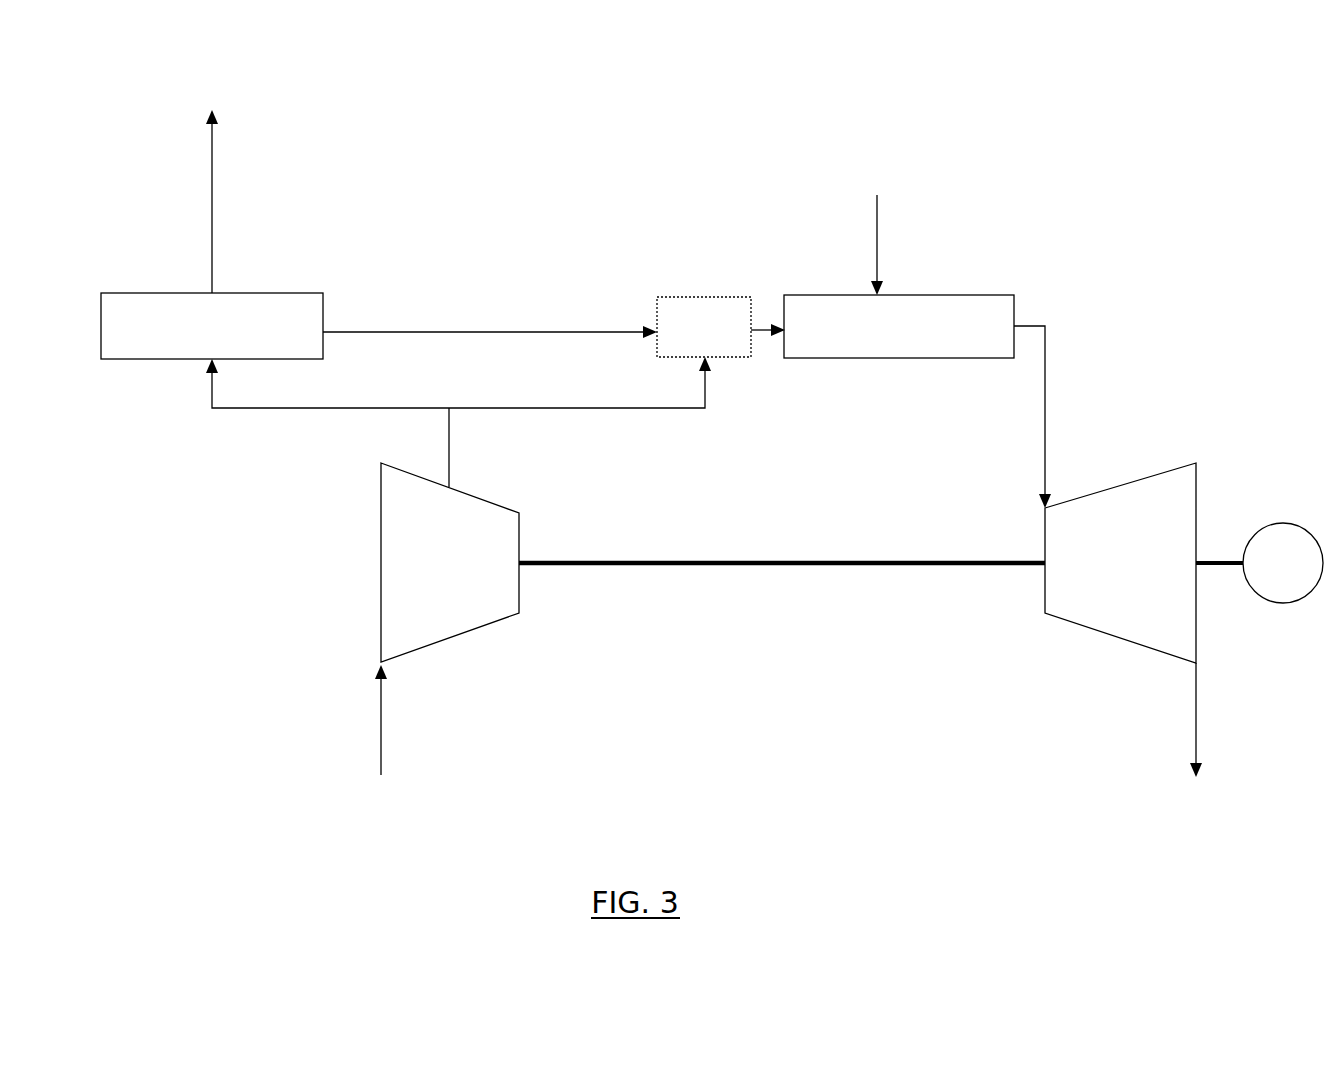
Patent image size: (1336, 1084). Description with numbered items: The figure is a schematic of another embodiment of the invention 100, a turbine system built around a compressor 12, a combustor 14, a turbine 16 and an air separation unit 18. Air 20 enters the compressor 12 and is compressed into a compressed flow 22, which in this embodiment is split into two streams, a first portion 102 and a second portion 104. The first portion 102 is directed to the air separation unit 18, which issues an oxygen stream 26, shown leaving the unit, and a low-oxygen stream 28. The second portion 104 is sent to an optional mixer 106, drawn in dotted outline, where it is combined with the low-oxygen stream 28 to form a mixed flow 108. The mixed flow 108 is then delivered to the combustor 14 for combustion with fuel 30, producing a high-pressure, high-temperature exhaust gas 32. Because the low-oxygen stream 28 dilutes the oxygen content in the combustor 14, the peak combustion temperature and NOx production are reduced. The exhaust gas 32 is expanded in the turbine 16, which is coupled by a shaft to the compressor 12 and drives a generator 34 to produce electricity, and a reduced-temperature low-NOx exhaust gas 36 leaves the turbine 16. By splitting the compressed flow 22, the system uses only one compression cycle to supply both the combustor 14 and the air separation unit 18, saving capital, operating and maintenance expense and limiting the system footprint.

The turbine system embodiment 100 is at (395, 152).
The compressor 12 is at (463, 584).
The combustor 14 is at (913, 342).
The turbine 16 is at (1139, 571).
The air separation unit 18 is at (193, 342).
The air 20 is at (380, 743).
The compressed flow 22 is at (475, 447).
The oxygen stream 26 is at (227, 182).
The low-oxygen stream 28 is at (490, 317).
The fuel 30 is at (879, 227).
The exhaust gas 32 is at (1054, 417).
The generator 34 is at (1283, 523).
The low-NOx exhaust gas 36 is at (1192, 744).
The first portion 102 is at (327, 383).
The second portion 104 is at (580, 382).
The mixer 106 is at (727, 341).
The mixed flow 108 is at (776, 330).